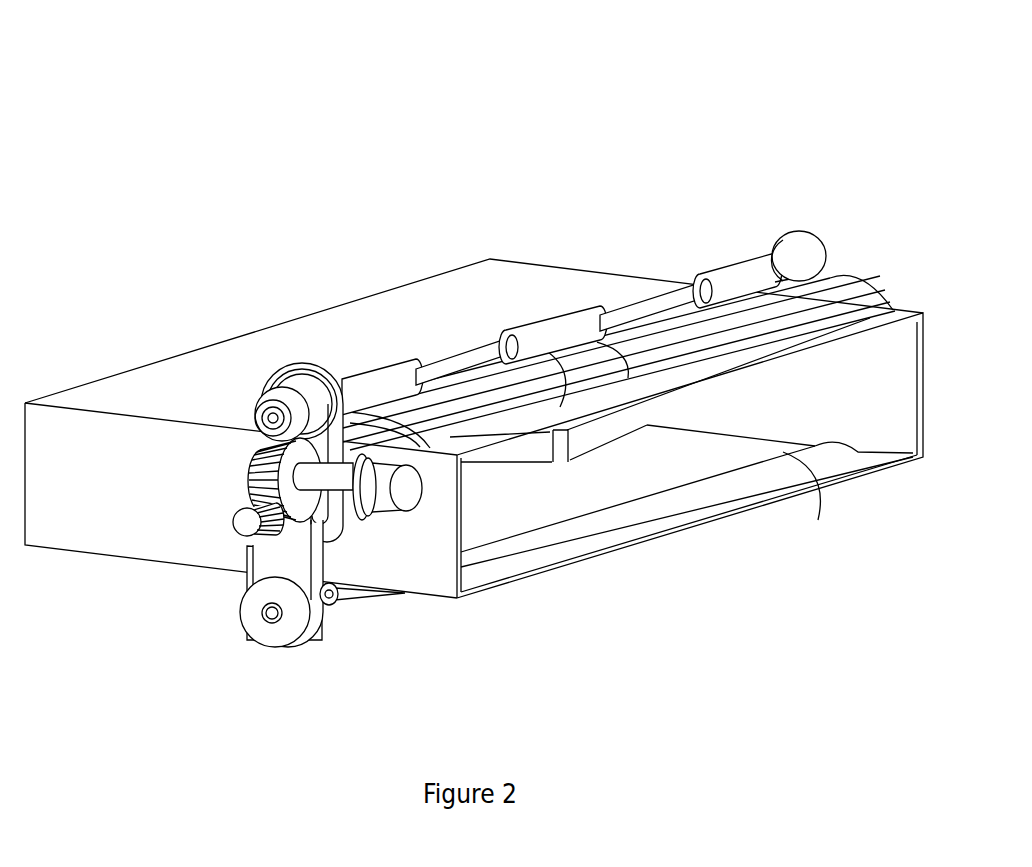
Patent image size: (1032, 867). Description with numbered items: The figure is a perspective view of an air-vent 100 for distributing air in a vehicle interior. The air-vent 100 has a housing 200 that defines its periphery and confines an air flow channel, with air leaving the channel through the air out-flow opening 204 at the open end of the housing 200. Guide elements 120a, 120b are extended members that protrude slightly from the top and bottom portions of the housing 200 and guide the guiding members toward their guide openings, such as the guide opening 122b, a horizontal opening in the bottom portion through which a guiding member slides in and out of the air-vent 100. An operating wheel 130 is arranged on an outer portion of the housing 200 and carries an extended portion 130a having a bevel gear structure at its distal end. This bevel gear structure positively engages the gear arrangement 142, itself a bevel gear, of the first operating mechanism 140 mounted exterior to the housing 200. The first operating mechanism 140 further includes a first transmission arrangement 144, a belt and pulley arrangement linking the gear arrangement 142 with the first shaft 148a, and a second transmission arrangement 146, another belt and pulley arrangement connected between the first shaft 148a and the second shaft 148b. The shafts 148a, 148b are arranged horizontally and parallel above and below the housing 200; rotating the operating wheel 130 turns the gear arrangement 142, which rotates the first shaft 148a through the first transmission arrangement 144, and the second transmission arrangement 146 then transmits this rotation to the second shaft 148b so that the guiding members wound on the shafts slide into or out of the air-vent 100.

The air-vent 100 is at (416, 217).
The housing 200 is at (525, 262).
The first operating mechanism 140 is at (190, 494).
The first shaft 148a is at (627, 297).
The guide element 120a is at (418, 447).
The first transmission arrangement 144 is at (327, 365).
The extended portion 130a is at (250, 455).
The operating wheel 130 is at (403, 513).
The gear arrangement 142 is at (230, 525).
The second transmission arrangement 146 is at (323, 622).
The second shaft 148b is at (343, 603).
The guide element 120b is at (360, 592).
The guide opening 122b is at (613, 513).
The air out-flow opening 204 is at (714, 450).